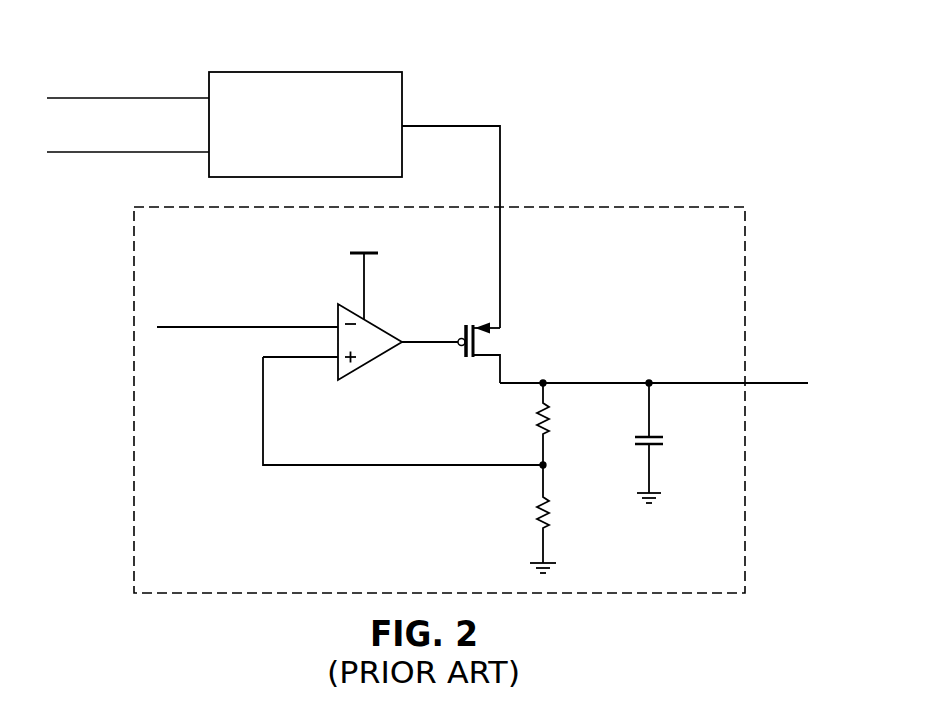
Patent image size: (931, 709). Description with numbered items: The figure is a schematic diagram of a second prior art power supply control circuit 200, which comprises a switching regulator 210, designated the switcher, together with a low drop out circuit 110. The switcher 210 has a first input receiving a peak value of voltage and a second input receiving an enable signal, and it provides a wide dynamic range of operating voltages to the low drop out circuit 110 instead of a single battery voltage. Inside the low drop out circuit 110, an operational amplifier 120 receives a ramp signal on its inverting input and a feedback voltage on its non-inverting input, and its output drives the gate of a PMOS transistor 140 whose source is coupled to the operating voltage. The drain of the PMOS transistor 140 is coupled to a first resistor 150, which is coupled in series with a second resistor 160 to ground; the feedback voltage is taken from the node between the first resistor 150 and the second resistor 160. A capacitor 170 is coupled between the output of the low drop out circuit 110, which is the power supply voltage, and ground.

The power supply control circuit 200 is at (657, 81).
The switching regulator 210 is at (361, 71).
The low drop out (LDO) circuit 110 is at (633, 206).
The operational amplifier 120 is at (381, 323).
The PMOS transistor 140 is at (465, 356).
The first resistor 150 is at (538, 416).
The second resistor 160 is at (538, 508).
The capacitor 170 is at (657, 436).